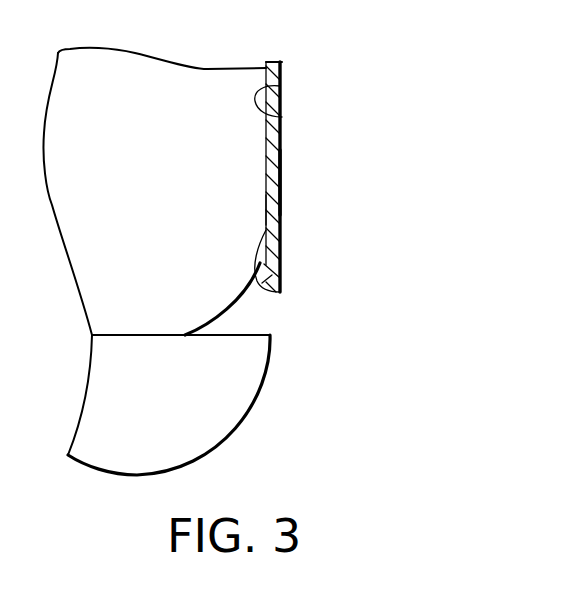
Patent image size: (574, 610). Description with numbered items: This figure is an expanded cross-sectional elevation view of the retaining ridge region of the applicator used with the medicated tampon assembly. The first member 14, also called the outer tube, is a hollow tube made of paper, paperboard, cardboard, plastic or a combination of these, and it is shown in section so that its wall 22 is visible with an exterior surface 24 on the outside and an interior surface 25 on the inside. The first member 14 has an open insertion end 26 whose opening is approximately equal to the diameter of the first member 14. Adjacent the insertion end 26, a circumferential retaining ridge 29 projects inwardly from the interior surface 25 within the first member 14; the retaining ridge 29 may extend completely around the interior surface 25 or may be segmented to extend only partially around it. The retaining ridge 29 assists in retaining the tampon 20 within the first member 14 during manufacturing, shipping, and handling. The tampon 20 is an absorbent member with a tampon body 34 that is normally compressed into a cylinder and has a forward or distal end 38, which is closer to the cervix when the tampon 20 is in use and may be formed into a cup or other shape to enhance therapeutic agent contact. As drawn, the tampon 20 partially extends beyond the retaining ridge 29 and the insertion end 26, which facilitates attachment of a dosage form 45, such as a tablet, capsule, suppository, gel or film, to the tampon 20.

The first member 14 is at (298, 60).
The tampon 20 is at (234, 187).
The wall 22 is at (282, 208).
The exterior surface 24 is at (282, 183).
The interior surface 25 is at (282, 81).
The insertion end 26 is at (282, 236).
The retaining ridge 29 is at (270, 276).
The tampon body 34 is at (181, 194).
The distal end 38 is at (228, 309).
The dosage form 45 is at (226, 445).